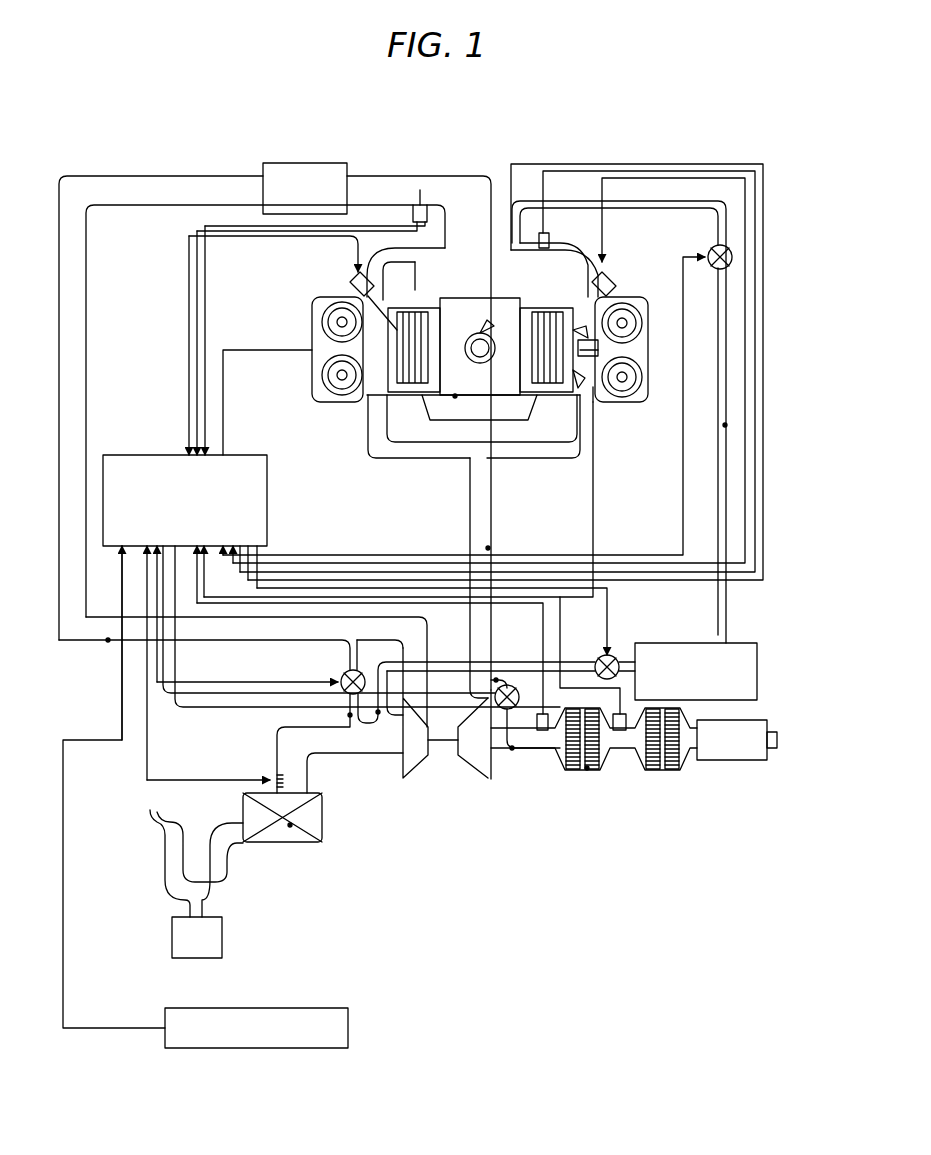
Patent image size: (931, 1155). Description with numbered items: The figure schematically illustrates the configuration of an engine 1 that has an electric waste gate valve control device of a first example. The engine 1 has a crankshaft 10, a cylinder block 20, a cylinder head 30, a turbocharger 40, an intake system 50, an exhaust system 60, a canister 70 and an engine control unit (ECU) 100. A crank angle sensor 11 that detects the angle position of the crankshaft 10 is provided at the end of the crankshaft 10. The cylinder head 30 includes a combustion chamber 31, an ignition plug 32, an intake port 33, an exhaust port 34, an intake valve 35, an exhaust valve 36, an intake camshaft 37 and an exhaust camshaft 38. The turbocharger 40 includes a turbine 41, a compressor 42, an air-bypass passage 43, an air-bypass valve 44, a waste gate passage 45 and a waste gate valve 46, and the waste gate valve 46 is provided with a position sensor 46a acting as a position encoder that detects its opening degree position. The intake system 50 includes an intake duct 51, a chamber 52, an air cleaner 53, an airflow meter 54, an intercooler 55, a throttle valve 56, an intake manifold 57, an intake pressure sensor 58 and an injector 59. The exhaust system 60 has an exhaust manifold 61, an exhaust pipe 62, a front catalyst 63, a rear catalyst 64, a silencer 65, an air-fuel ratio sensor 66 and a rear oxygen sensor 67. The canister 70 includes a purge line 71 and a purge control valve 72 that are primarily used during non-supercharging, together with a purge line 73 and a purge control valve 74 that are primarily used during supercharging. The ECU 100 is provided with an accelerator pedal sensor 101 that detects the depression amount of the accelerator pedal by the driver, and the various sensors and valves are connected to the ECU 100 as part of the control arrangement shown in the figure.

The engine 1 is at (750, 130).
The crankshaft 10 is at (480, 362).
The crank angle sensor 11 is at (490, 325).
The cylinder block 20 is at (455, 398).
The cylinder head 30 is at (566, 394).
The combustion chamber 31 is at (585, 285).
The ignition plug 32 is at (598, 348).
The intake port 33 is at (597, 280).
The exhaust port 34 is at (580, 380).
The intake valve 35 is at (605, 262).
The exhaust valve 36 is at (590, 365).
The intake camshaft 37 is at (623, 323).
The exhaust camshaft 38 is at (623, 377).
The turbocharger 40 is at (442, 784).
The turbine 41 is at (472, 765).
The compressor 42 is at (415, 765).
The air-bypass passage 43 is at (378, 712).
The air-bypass valve 44 is at (338, 680).
The waste gate passage 45 is at (496, 680).
The waste gate valve 46 is at (513, 688).
The position sensor 46a is at (513, 749).
The intake system 50 is at (100, 165).
The intake duct 51 is at (277, 753).
The chamber 52 is at (172, 935).
The air cleaner 53 is at (290, 826).
The airflow meter 54 is at (280, 780).
The intercooler 55 is at (272, 163).
The throttle valve 56 is at (420, 190).
The intake manifold 57 is at (445, 248).
The intake pressure sensor 58 is at (536, 235).
The injector 59 is at (612, 290).
The exhaust system 60 is at (654, 818).
The exhaust manifold 61 is at (490, 548).
The exhaust pipe 62 is at (543, 727).
The front catalyst 63 is at (620, 730).
The rear catalyst 64 is at (665, 770).
The silencer 65 is at (733, 760).
The air-fuel ratio sensor 66 is at (587, 770).
The rear O2 sensor 67 is at (663, 770).
The canister 70 is at (757, 670).
The purge line 71 is at (726, 425).
The purge control valve 72 is at (733, 257).
The purge line 73 is at (378, 714).
The purge control valve 74 is at (614, 658).
The engine control unit (ECU) 100 is at (145, 455).
The accelerator pedal sensor 101 is at (348, 1020).